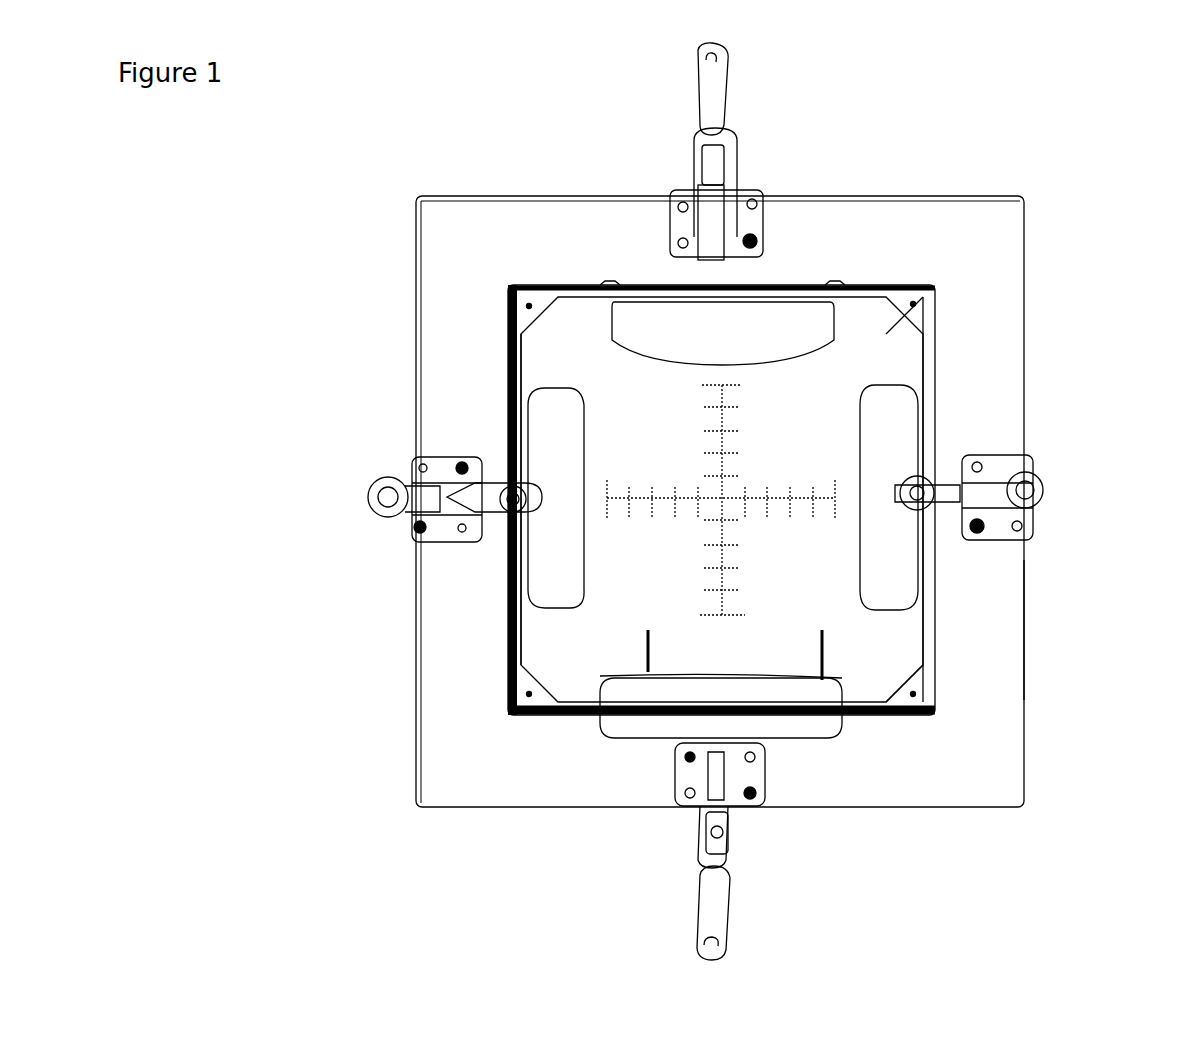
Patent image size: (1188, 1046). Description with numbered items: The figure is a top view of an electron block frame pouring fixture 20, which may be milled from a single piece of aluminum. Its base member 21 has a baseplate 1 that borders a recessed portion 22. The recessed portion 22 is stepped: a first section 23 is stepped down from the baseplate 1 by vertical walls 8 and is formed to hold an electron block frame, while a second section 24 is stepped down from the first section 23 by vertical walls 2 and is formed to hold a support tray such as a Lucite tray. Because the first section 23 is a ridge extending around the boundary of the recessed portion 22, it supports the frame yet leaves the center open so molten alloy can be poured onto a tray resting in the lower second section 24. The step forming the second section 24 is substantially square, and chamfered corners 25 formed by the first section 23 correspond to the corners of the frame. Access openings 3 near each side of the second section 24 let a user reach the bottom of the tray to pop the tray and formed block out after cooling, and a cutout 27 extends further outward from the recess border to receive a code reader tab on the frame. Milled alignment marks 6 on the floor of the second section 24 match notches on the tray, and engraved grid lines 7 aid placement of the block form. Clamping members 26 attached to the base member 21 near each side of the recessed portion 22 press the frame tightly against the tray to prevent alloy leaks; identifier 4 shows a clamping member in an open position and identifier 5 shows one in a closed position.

The baseplate 1 is at (520, 230).
The vertical walls 2 is at (573, 297).
The access cutouts or openings 3 is at (560, 550).
The clamping member in open position 4 is at (655, 757).
The clamping member in closed position 5 is at (953, 444).
The milled alignment marks 6 is at (838, 658).
The engraved grid lines 7 is at (755, 432).
The vertical walls 8 is at (906, 290).
The electron block frame pouring fixture 20 is at (853, 951).
The base member 21 is at (1030, 613).
The recessed portion 22 is at (560, 628).
The first section 23 is at (578, 714).
The second section 24 is at (503, 682).
The chamfered corners 25 is at (900, 693).
The clamping members 26 is at (740, 152).
The cutout 27 is at (817, 722).